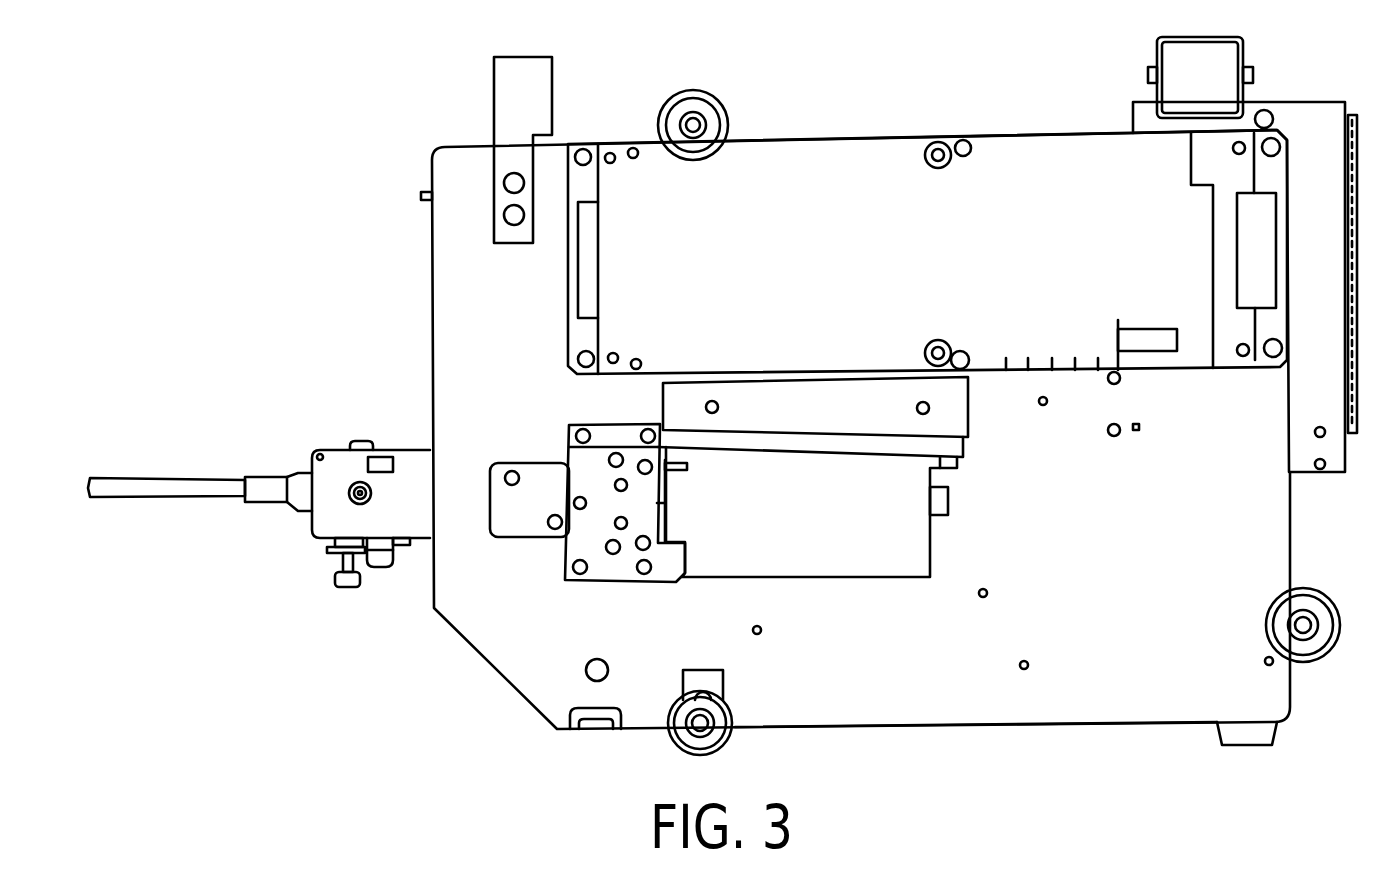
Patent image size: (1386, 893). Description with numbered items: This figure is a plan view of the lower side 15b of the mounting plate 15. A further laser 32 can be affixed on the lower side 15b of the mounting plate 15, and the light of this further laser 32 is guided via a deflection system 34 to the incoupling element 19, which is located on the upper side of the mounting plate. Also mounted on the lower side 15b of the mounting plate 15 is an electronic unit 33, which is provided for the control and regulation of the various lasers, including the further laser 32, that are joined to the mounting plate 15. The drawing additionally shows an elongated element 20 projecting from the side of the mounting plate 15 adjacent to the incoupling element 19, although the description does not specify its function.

The mounting plate 15 is at (1290, 487).
The lower side 15b is at (1147, 700).
The incoupling element 19 is at (412, 470).
The probe 20 is at (167, 487).
The further laser 32 is at (838, 553).
The electronic unit 33 is at (885, 160).
The deflection system 34 is at (593, 534).